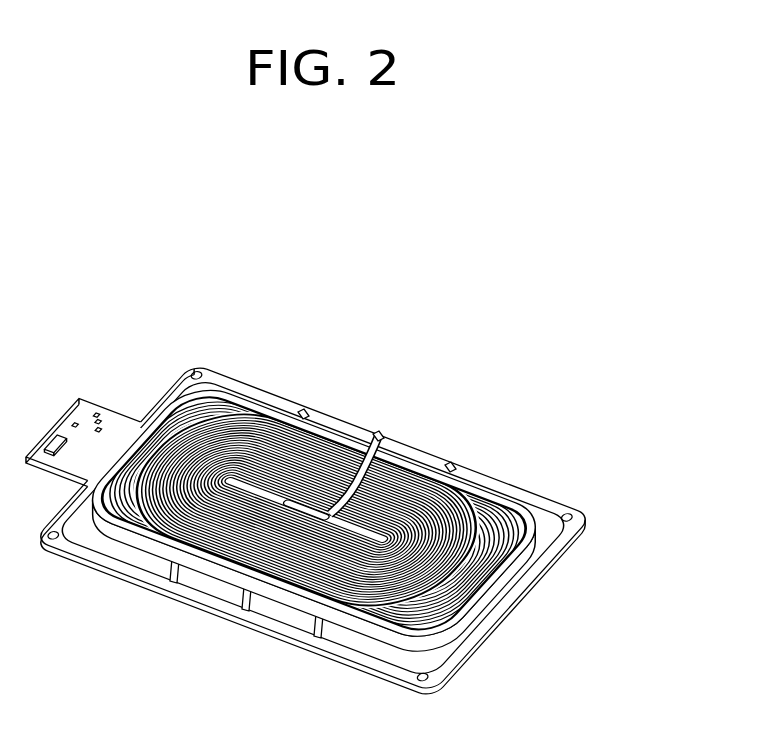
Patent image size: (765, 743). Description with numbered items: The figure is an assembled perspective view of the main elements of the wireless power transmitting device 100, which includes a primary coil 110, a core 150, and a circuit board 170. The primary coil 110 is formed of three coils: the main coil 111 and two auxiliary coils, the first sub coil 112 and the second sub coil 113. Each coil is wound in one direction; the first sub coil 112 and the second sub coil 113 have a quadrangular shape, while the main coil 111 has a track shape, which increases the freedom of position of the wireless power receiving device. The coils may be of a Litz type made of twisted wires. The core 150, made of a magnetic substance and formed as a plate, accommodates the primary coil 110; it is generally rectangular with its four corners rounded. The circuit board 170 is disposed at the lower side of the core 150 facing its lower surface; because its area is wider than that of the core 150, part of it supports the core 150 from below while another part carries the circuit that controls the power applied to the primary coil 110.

The wireless power transmitting device 100 is at (314, 496).
The primary coil 110 is at (313, 476).
The main coil 111 is at (328, 450).
The first sub coil 112 is at (485, 517).
The second sub coil 113 is at (185, 437).
The core 150 is at (458, 612).
The circuit board 170 is at (517, 590).